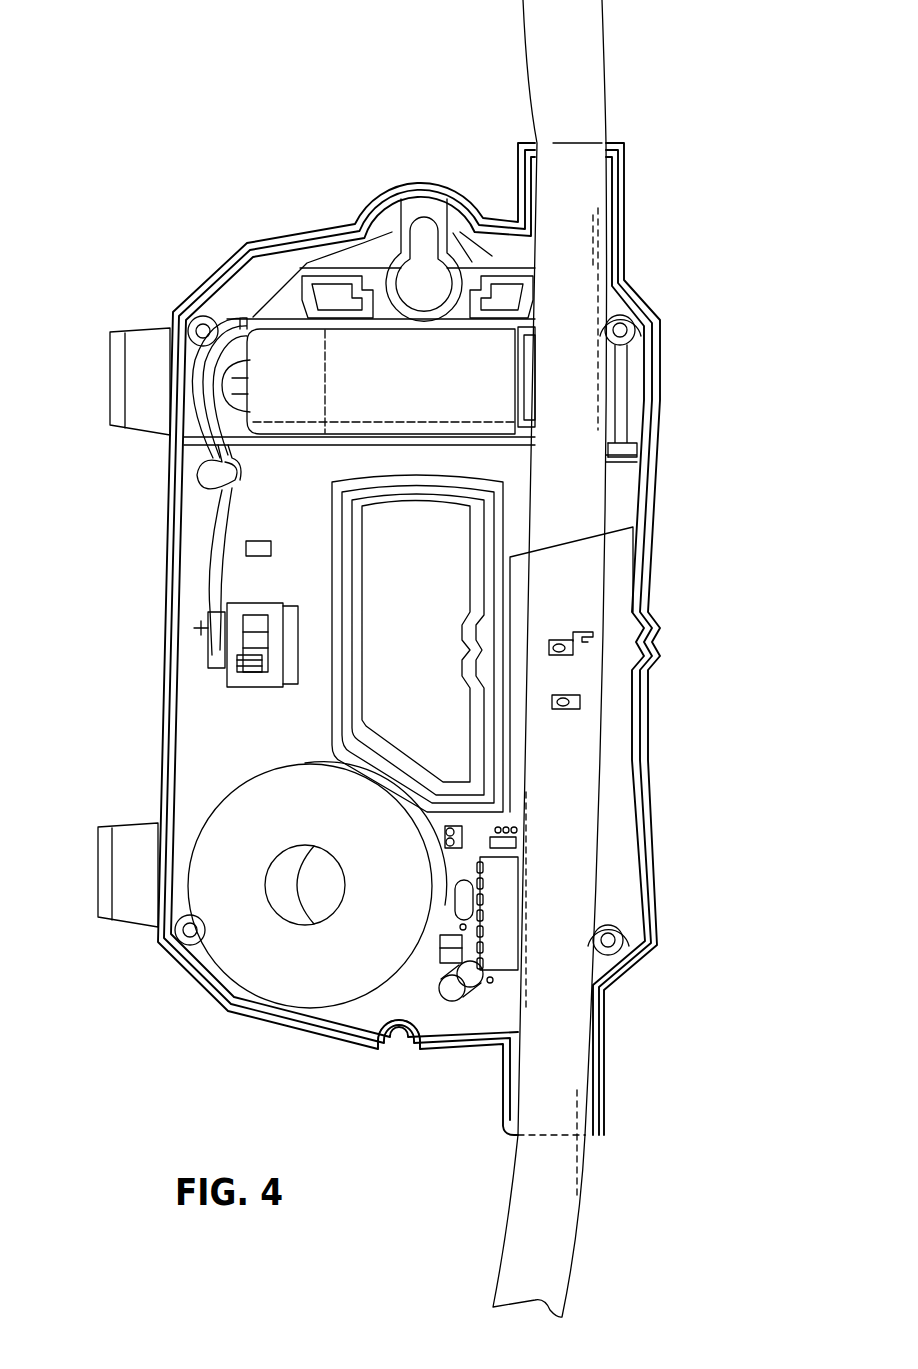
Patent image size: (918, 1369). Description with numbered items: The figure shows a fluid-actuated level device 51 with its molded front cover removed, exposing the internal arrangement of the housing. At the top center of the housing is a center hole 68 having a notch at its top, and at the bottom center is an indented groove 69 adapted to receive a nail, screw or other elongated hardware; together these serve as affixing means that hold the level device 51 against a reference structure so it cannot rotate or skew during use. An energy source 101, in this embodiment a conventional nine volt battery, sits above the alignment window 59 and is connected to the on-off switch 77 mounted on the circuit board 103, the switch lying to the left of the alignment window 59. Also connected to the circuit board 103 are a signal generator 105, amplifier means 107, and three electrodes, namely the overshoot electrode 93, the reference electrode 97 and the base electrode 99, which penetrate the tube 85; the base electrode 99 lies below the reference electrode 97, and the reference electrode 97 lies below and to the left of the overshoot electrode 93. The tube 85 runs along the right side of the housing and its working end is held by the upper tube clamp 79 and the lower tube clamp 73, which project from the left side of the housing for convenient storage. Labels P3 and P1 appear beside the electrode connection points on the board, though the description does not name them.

The level device 51 is at (686, 175).
The center hole 68 is at (423, 298).
The energy source 101 is at (470, 388).
The tube 85 is at (563, 498).
The alignment window 59 is at (442, 548).
The overshoot electrode 93 is at (588, 637).
The reference electrode 97 is at (573, 650).
The base electrode 99 is at (580, 702).
The amplifier means 107 is at (507, 893).
The indented groove 69 is at (398, 1040).
The upper tube clamp 79 is at (152, 371).
The on-off switch 77 is at (260, 643).
The circuit board 103 is at (228, 746).
The signal generator 105 is at (235, 868).
The lower tube clamp 73 is at (140, 907).
The connector P3 is at (586, 616).
The connector P1 is at (566, 681).